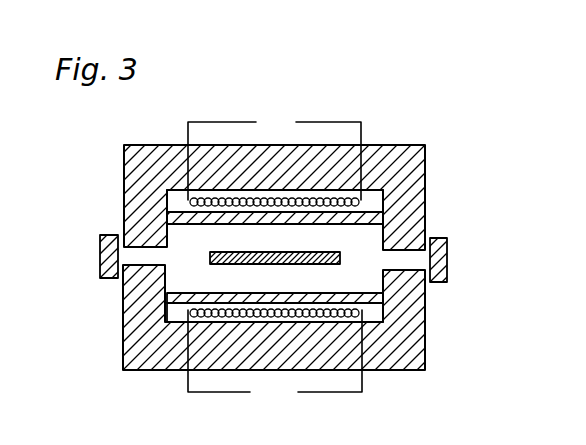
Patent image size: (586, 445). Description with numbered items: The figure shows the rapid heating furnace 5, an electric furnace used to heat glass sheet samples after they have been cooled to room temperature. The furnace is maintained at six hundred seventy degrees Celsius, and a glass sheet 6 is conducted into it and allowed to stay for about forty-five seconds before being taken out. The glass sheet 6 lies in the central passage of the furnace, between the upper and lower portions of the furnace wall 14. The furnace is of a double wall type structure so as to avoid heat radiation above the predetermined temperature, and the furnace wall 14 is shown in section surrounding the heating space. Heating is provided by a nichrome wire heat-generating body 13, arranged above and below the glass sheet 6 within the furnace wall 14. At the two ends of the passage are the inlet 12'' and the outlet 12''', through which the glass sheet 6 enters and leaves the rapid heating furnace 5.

The rapid heating furnace 5 is at (395, 134).
The glass sheet 6 is at (340, 258).
The inlet 12'' is at (103, 242).
The outlet 12''' is at (441, 260).
The nichrome wire heat-generating body 13 is at (190, 180).
The furnace wall 14 is at (412, 163).